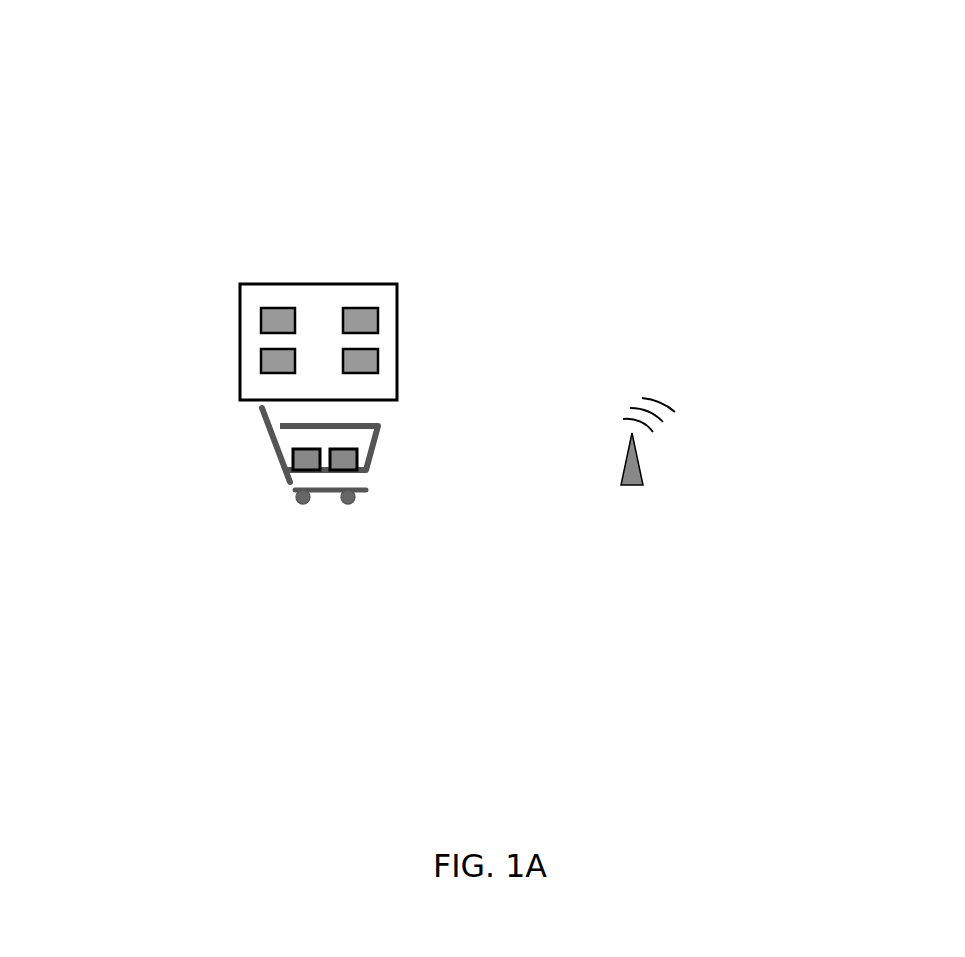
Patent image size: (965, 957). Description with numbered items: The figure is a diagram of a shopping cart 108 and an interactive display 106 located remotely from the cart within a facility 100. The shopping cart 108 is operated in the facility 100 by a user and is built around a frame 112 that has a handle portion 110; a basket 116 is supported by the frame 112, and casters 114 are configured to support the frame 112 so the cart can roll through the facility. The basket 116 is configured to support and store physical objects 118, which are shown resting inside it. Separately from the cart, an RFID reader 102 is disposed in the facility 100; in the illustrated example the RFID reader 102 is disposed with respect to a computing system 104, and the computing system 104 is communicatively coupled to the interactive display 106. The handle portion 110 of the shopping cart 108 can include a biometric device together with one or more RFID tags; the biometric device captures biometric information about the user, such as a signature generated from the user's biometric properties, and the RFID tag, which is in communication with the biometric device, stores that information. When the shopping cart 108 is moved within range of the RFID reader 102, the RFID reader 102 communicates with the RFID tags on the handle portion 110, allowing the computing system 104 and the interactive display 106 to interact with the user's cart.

The facility 100 is at (858, 66).
The RFID reader 102 is at (638, 460).
The computing system 104 is at (398, 309).
The interactive display 106 is at (377, 360).
The shopping cart 108 is at (296, 481).
The handle portion 110 is at (262, 410).
The frame 112 is at (290, 482).
The casters 114 is at (370, 492).
The basket 116 is at (376, 447).
The physical objects 118 is at (305, 467).